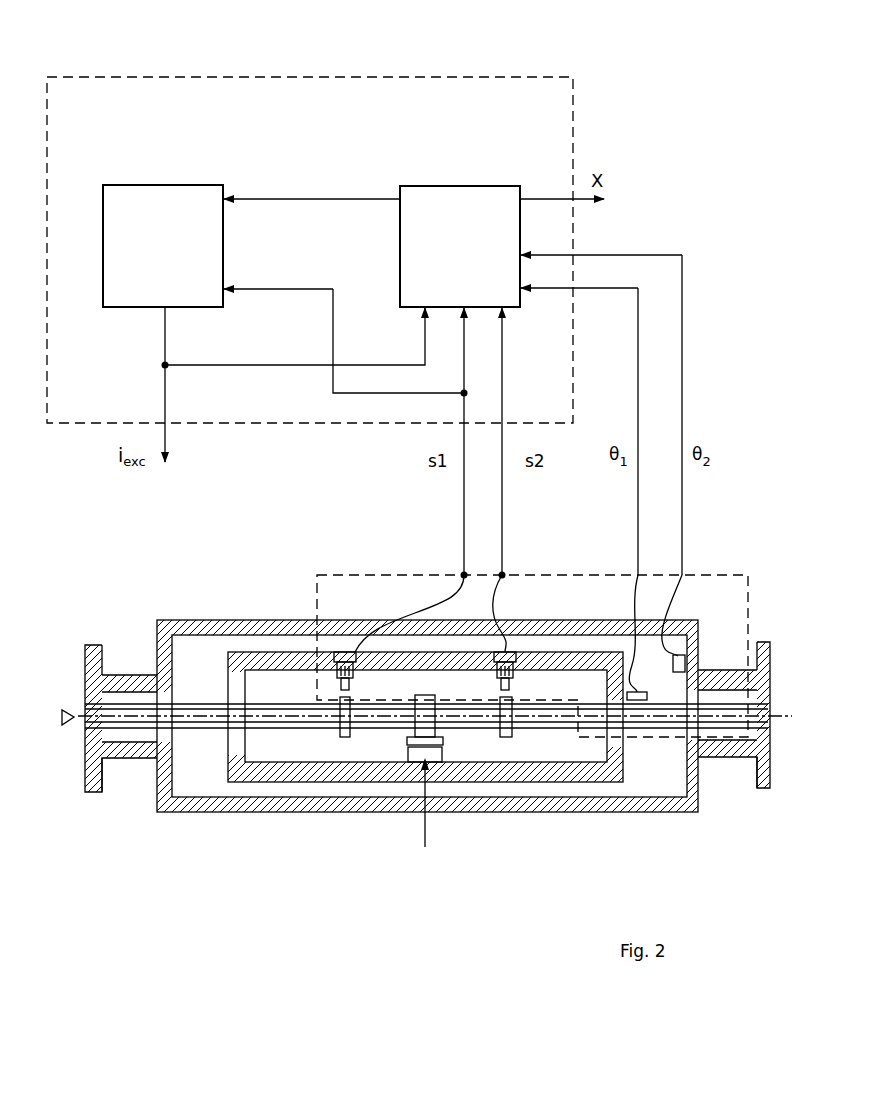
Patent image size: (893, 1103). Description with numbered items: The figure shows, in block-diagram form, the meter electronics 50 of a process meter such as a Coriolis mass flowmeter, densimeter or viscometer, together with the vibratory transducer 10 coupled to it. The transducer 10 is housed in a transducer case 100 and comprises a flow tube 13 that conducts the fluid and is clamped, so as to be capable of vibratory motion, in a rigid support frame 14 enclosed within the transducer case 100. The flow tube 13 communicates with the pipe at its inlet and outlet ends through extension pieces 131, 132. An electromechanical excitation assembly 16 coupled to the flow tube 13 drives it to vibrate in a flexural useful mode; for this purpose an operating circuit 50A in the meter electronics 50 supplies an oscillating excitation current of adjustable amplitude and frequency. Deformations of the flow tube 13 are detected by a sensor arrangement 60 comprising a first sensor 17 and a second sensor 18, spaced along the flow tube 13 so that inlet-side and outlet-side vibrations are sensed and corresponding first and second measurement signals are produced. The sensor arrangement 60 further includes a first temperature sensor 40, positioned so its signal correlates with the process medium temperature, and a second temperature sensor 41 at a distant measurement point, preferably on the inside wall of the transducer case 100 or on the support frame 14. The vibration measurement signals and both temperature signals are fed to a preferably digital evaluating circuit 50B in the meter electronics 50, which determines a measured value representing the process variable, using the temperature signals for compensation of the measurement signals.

The vibratory transducer 10 is at (252, 615).
The flow tube 13 is at (182, 704).
The support frame 14 is at (273, 782).
The electromechanical excitation assembly 16 is at (447, 745).
The first sensor 17 is at (348, 652).
The second sensor 18 is at (507, 652).
The first temperature sensor 40 is at (637, 700).
The second temperature sensor 41 is at (682, 660).
The meter electronics 50 is at (254, 77).
The operating circuit 50A is at (178, 185).
The evaluating circuit 50B is at (470, 186).
The sensor arrangement 60 is at (322, 573).
The transducer case 100 is at (421, 712).
The inlet-end extension piece 131 is at (193, 718).
The outlet-end extension piece 132 is at (700, 716).